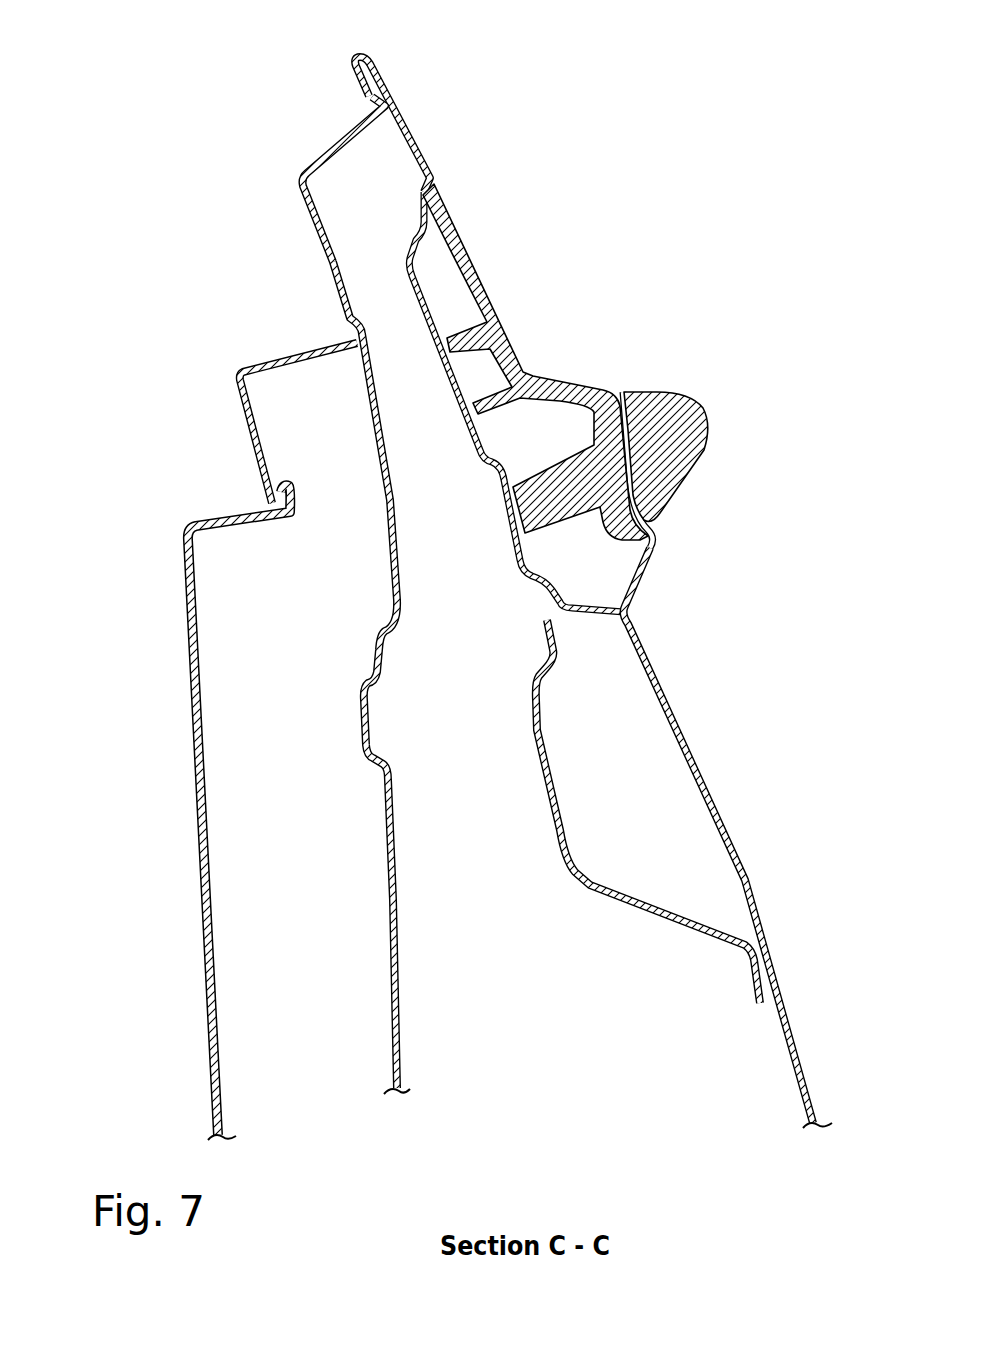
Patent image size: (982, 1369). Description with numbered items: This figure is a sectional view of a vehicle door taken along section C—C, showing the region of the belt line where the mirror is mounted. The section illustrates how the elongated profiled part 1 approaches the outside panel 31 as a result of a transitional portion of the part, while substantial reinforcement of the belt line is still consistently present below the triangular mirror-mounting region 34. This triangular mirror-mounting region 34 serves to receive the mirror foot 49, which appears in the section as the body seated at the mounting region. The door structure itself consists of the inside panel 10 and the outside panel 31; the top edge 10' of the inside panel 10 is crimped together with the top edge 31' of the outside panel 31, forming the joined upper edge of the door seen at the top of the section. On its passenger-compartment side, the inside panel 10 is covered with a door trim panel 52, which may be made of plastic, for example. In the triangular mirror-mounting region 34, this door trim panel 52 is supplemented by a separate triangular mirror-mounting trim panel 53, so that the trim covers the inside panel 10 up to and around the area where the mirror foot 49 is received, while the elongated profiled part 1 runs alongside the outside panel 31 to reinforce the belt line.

The top edge of outside panel 31' is at (426, 101).
The top edge of inside panel 10' is at (316, 179).
The inside panel 10 is at (416, 678).
The triangular mirror-mounting trim panel 53 is at (248, 427).
The door trim panel 52 is at (192, 708).
The triangular mirror-mounting region 34 is at (480, 455).
The outside panel 31 is at (727, 760).
The mirror foot 49 is at (523, 367).
The elongated profiled part 1 is at (575, 886).